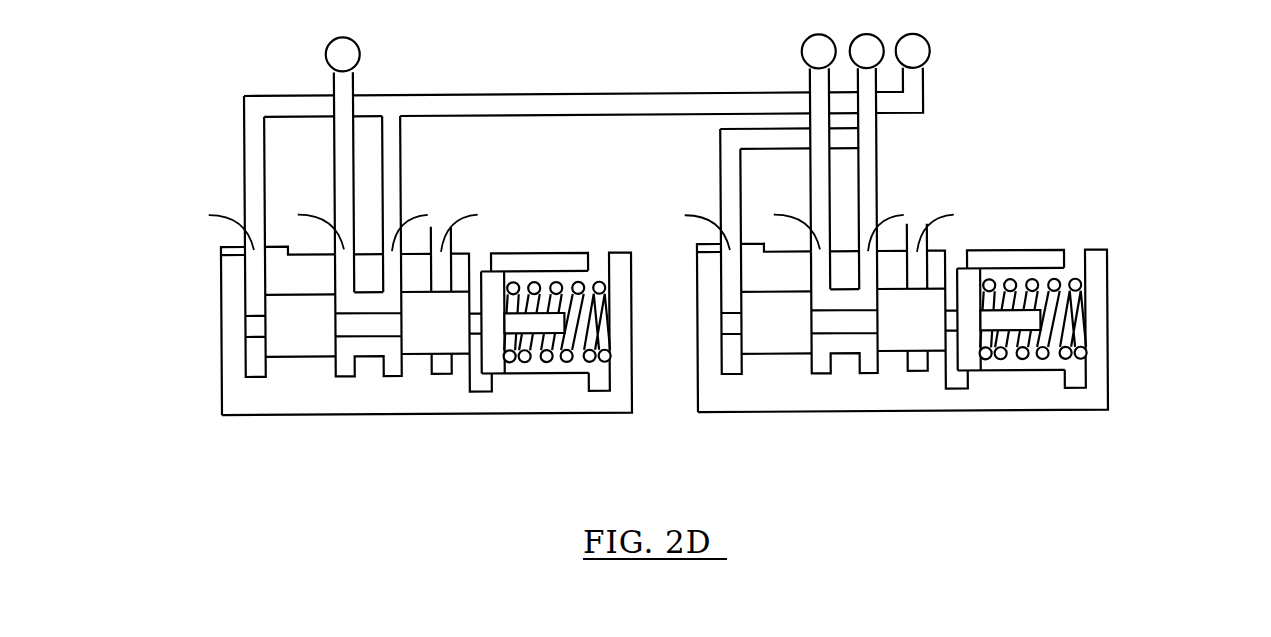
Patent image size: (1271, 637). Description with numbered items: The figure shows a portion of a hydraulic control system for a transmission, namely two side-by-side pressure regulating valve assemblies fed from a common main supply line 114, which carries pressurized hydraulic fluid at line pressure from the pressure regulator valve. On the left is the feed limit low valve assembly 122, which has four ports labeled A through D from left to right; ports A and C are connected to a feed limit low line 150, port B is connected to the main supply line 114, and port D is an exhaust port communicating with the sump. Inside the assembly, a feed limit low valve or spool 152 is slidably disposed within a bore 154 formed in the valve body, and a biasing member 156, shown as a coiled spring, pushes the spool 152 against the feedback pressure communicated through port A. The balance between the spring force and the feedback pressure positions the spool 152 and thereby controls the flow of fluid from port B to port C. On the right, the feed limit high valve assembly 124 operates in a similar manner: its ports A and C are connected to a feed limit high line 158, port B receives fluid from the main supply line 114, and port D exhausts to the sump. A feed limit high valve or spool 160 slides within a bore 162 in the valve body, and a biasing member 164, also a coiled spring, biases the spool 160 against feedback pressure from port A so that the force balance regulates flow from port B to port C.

The main supply line 114 is at (328, 142).
The feed limit low valve assembly 122 is at (358, 258).
The feed limit high valve assembly 124 is at (965, 258).
The feed limit low line 150 is at (548, 96).
The feed limit low valve 152 is at (420, 337).
The bore 154 is at (552, 372).
The biasing member 156 is at (576, 284).
The feed limit high line 158 is at (854, 149).
The feed limit high valve 160 is at (812, 367).
The bore 162 is at (1006, 373).
The biasing member 164 is at (1033, 277).